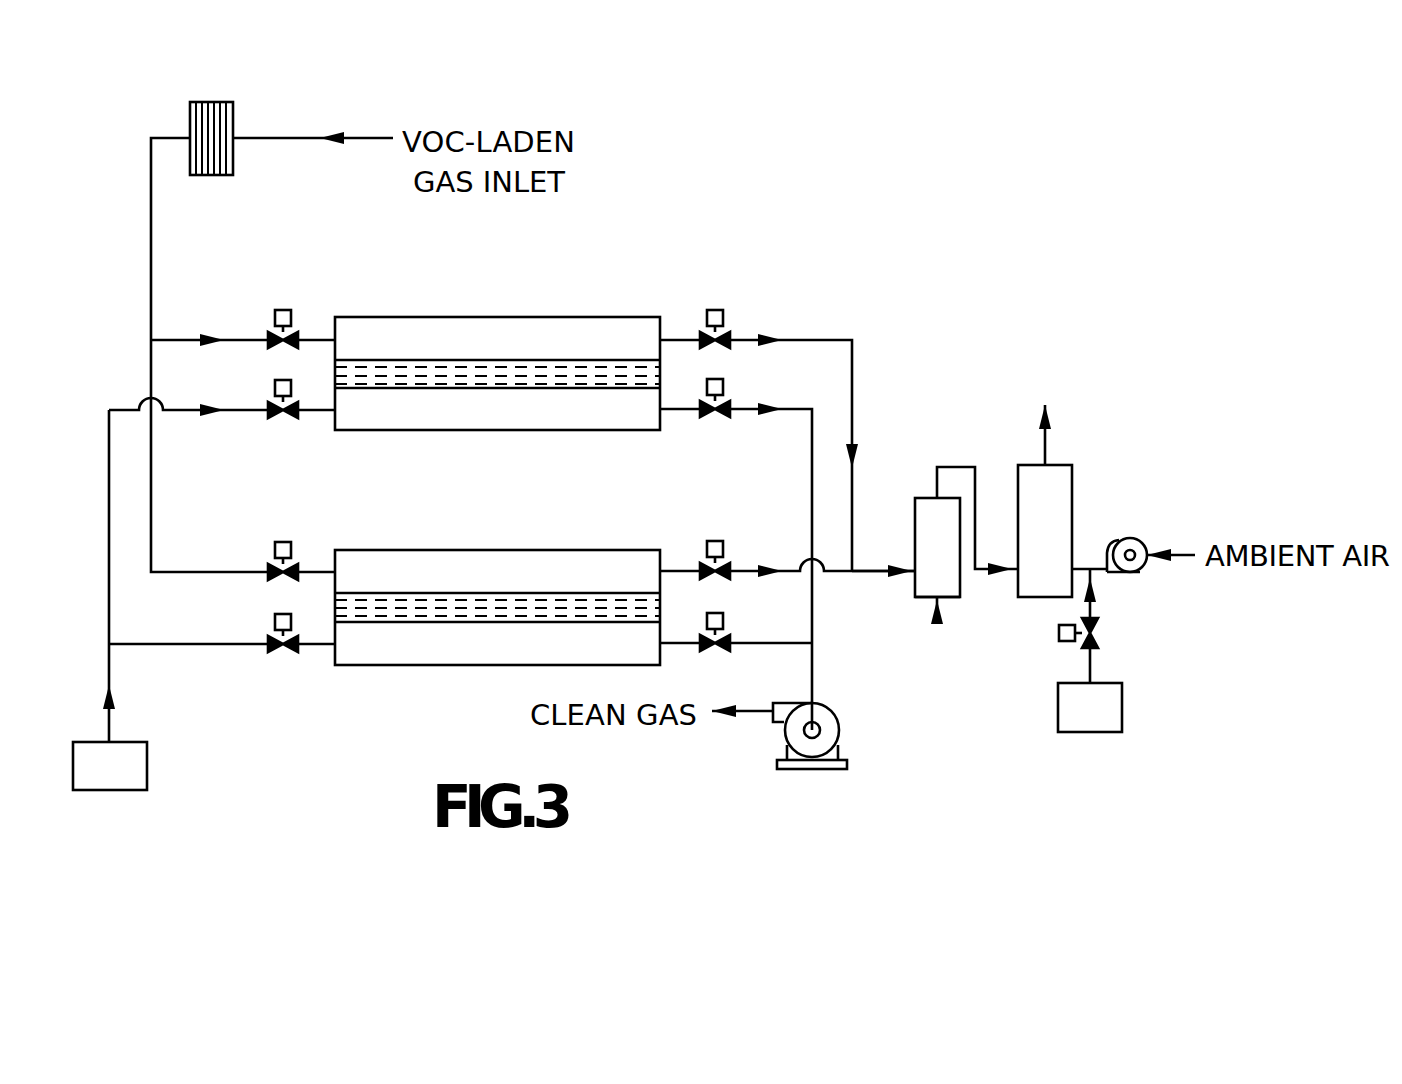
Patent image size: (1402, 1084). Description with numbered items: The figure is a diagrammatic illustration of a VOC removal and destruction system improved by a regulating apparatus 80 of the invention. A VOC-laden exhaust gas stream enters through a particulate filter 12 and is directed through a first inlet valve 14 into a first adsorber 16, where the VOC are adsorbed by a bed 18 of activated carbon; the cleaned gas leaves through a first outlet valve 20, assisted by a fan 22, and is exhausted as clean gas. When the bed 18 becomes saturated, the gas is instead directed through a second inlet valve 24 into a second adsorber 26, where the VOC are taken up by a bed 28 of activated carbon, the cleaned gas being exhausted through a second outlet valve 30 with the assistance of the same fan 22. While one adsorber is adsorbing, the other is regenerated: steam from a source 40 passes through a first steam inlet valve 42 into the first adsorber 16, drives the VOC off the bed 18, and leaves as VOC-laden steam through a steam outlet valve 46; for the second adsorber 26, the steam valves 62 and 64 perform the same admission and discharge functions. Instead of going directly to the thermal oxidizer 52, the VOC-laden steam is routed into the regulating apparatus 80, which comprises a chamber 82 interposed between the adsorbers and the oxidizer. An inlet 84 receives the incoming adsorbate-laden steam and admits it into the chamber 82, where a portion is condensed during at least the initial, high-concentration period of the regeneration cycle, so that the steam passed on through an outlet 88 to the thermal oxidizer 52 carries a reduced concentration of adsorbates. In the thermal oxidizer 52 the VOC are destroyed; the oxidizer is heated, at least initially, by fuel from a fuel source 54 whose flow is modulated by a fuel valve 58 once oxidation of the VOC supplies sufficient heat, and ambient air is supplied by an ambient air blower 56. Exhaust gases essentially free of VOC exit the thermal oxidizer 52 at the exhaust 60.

The particulate filter 12 is at (224, 102).
The first inlet valve 14 is at (283, 310).
The first adsorber 16 is at (482, 317).
The bed of activated carbon 18 is at (548, 360).
The first outlet valve 20 is at (718, 419).
The fan 22 is at (822, 726).
The second inlet valve 24 is at (283, 542).
The second adsorber 26 is at (482, 550).
The bed of activated carbon 28 is at (548, 593).
The second outlet valve 30 is at (718, 653).
The source of steam 40 is at (147, 762).
The first steam inlet valve 42 is at (280, 420).
The steam outlet valve 46 is at (718, 310).
The thermal oxidizer 52 is at (1072, 486).
The fuel source 54 is at (1074, 732).
The ambient air blower 56 is at (1125, 540).
The fuel valve 58 is at (1098, 628).
The exhaust 60 is at (1048, 462).
The steam valve 62 is at (280, 654).
The steam valve 64 is at (718, 541).
The regulating apparatus 80 is at (937, 622).
The chamber 82 is at (960, 585).
The inlet 84 is at (912, 572).
The outlet 88 is at (937, 498).